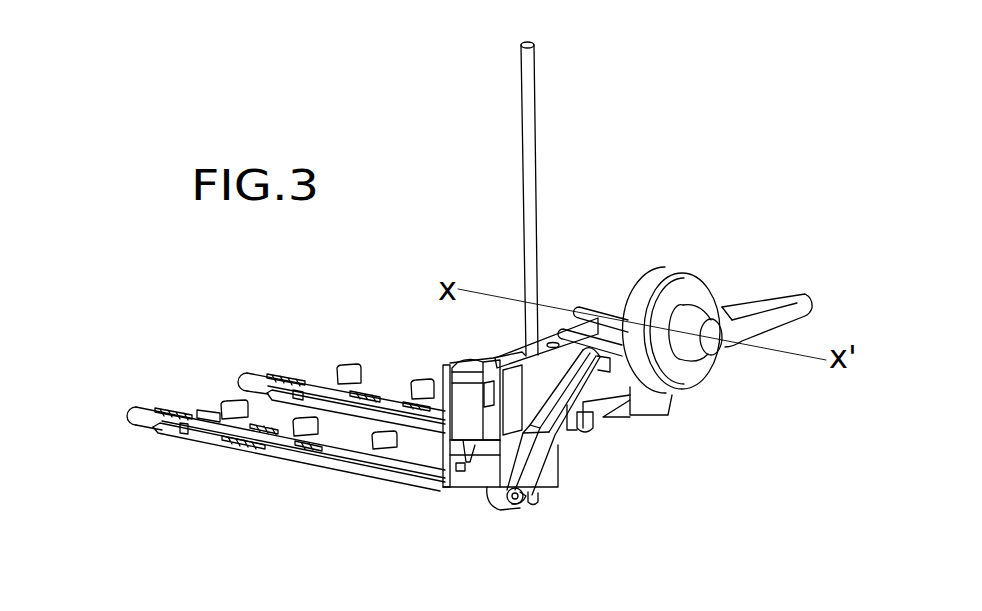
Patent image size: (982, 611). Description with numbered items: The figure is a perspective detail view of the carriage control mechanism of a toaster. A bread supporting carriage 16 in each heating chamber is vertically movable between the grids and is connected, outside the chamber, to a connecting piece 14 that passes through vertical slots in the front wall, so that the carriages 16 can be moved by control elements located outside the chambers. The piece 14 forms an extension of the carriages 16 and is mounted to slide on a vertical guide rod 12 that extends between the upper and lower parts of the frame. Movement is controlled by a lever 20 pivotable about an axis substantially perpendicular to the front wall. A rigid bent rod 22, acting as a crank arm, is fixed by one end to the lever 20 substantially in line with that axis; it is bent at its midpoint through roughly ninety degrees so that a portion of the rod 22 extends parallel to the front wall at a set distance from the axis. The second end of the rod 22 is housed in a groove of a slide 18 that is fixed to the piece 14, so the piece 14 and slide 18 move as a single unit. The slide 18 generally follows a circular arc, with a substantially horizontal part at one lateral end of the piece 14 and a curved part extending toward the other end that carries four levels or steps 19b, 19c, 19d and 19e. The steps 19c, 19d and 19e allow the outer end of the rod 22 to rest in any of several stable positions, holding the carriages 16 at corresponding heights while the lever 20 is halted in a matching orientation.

The vertical guide rod 12 is at (527, 110).
The connecting piece 14 is at (543, 472).
The bread supporting carriage 16 is at (127, 412).
The slide 18 is at (590, 425).
The step 19b is at (672, 400).
The step 19c is at (580, 392).
The step 19d is at (560, 445).
The step 19e is at (487, 493).
The lever 20 is at (773, 302).
The bent rod 22 is at (594, 307).